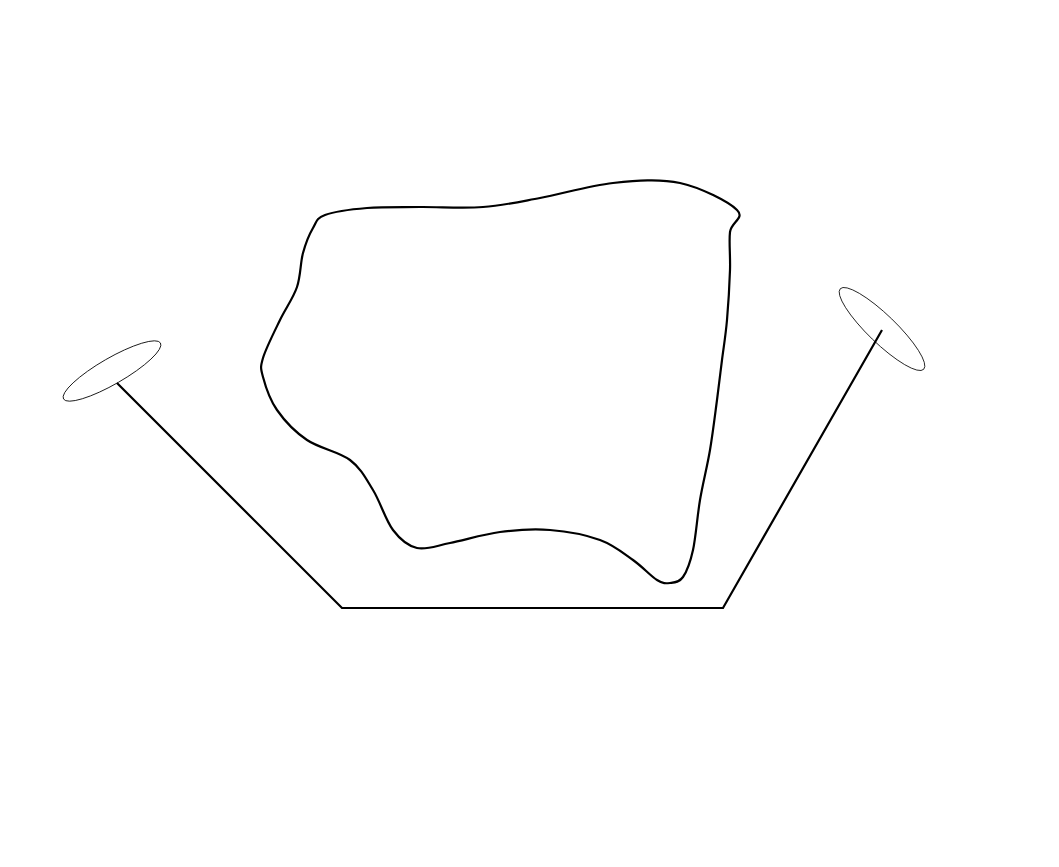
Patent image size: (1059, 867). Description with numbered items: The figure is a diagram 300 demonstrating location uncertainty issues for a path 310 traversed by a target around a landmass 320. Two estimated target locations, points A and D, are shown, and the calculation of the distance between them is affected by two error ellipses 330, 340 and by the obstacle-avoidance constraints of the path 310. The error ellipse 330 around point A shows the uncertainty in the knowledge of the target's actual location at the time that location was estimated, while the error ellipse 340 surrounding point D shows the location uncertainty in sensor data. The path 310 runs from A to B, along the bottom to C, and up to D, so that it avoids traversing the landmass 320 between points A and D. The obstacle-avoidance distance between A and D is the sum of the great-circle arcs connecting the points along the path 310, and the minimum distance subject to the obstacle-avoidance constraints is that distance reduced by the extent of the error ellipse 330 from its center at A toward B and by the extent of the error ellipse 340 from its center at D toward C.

The diagram 300 is at (760, 40).
The path 310 is at (252, 520).
The landmass 320 is at (500, 192).
The error ellipse 330 is at (156, 345).
The error ellipse 340 is at (923, 370).